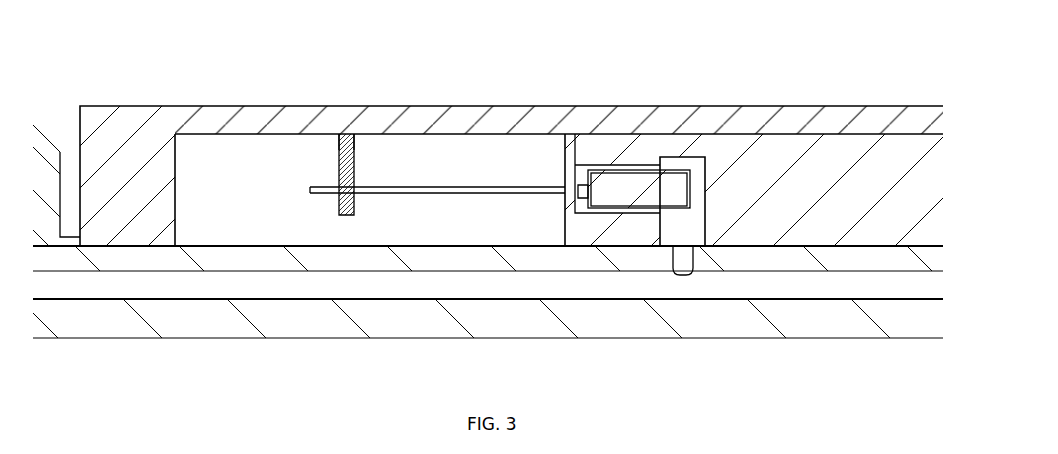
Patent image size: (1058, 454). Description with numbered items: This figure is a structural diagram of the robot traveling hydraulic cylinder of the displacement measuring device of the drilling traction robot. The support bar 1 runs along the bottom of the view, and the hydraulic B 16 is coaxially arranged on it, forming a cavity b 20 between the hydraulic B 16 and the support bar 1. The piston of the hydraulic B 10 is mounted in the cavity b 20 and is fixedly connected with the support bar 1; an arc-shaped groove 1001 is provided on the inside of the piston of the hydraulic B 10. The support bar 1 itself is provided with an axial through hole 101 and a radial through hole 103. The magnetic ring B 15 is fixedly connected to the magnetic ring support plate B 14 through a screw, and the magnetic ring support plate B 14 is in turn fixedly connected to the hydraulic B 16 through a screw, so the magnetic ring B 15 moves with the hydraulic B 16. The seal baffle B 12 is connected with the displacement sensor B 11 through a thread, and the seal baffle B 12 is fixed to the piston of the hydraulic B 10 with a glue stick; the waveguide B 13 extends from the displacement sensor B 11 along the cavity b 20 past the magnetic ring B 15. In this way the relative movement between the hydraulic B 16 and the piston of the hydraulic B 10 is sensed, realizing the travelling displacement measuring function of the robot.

The support bar 1 is at (247, 262).
The piston of the hydraulic B 10 is at (693, 150).
The displacement sensor B 11 is at (638, 185).
The seal baffle B 12 is at (573, 165).
The waveguide B 13 is at (408, 190).
The magnetic ring support plate B 14 is at (350, 150).
The magnetic ring B 15 is at (341, 172).
The hydraulic B 16 is at (248, 125).
The cavity b 20 is at (398, 222).
The through hole 101 is at (555, 285).
The through hole 103 is at (682, 262).
The arc-shaped groove 1001 is at (696, 212).